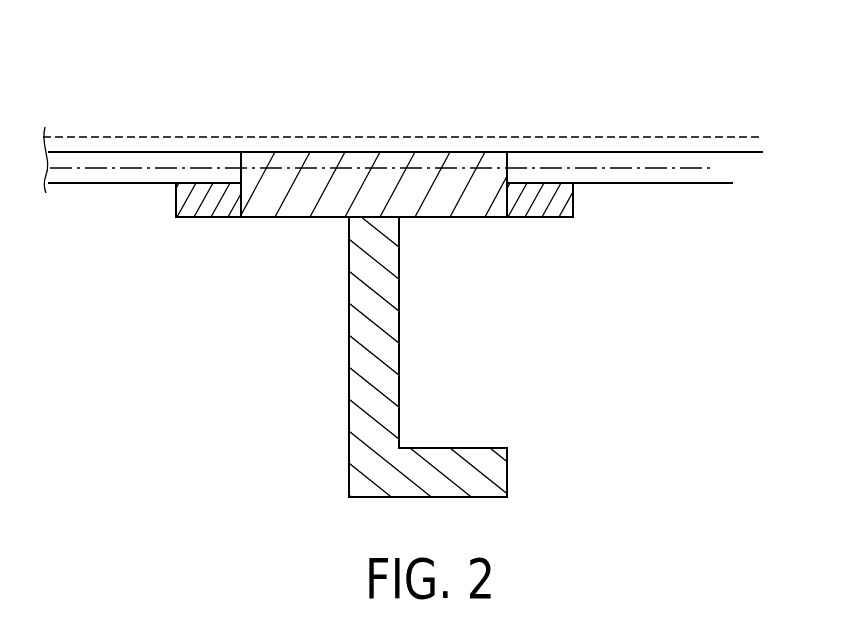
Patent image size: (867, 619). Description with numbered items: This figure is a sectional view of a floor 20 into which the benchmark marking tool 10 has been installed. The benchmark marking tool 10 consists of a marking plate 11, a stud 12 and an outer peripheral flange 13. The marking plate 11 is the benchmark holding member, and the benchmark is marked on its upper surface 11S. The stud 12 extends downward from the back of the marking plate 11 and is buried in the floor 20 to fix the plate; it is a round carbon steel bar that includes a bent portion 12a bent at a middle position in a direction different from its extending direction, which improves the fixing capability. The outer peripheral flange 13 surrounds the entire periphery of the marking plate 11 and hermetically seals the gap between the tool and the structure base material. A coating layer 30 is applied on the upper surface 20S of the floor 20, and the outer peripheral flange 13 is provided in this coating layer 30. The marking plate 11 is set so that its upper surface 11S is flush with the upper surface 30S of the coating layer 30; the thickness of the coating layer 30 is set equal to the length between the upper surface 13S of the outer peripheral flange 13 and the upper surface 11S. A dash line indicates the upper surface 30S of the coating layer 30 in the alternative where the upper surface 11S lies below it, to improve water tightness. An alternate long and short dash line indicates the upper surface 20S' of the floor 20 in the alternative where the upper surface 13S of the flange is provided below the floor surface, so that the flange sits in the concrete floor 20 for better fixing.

The benchmark marking tool 10 is at (468, 85).
The marking plate 11 is at (296, 217).
The upper surface of the marking plate 11S is at (377, 152).
The stud 12 is at (399, 353).
The bent portion 12a is at (507, 473).
The outer peripheral flange 13 is at (207, 217).
The upper surface of the outer peripheral flange 13S is at (176, 200).
The floor 20 is at (135, 372).
The upper surface of the floor 20S is at (112, 217).
The upper surface of the floor (alternative) 20S' is at (402, 118).
The coating layer 30 is at (718, 154).
The upper surface of the coating layer 30S is at (542, 152).